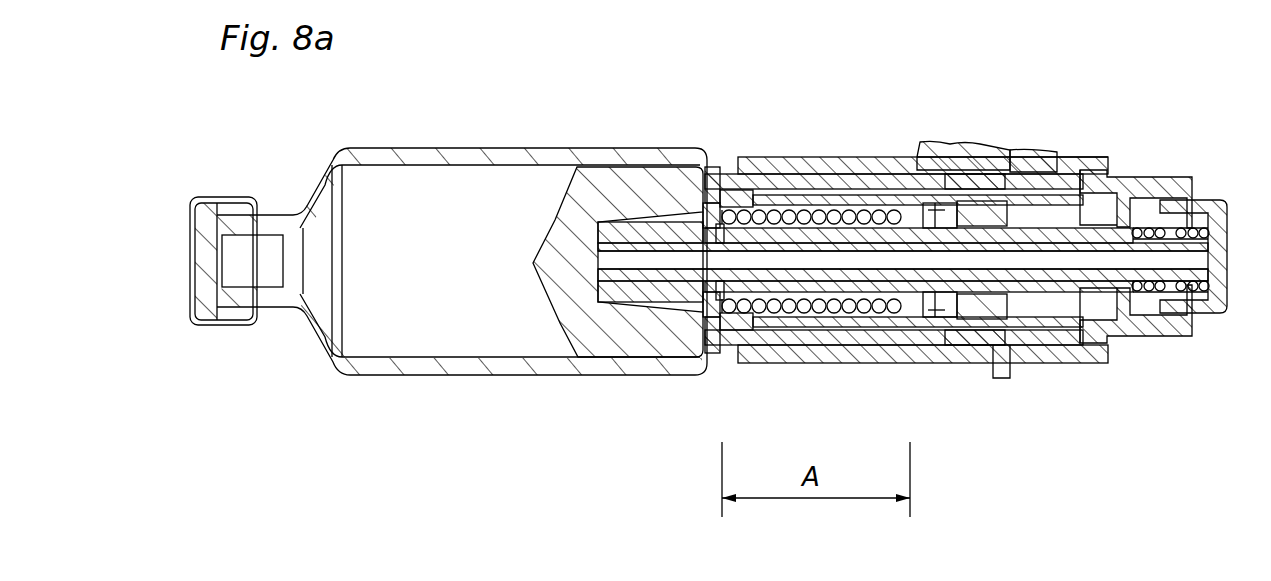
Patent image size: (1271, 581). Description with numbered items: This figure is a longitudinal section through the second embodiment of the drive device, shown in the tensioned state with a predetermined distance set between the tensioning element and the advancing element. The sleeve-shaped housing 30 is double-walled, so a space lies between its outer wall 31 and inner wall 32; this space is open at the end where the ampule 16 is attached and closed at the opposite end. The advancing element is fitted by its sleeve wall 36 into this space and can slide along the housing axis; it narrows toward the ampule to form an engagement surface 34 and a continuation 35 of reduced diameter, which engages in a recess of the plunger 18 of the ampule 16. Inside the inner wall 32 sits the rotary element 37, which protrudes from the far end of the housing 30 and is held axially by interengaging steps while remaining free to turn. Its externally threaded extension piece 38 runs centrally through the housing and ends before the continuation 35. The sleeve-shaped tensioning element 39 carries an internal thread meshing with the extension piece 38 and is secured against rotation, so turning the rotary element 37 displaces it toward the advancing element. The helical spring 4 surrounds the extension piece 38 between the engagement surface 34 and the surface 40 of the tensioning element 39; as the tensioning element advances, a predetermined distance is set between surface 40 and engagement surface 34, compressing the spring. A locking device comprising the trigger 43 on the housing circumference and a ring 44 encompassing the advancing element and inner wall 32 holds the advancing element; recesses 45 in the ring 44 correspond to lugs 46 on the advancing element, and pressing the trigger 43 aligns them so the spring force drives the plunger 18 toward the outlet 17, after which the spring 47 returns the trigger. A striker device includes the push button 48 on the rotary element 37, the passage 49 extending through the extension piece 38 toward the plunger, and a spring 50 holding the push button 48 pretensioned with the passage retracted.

The ampule 16 is at (446, 183).
The outlet 17 is at (272, 247).
The plunger 18 is at (620, 185).
The helical spring 4 is at (838, 212).
The housing 30 is at (878, 195).
The outer wall 31 is at (797, 350).
The inner wall 32 is at (880, 348).
The engagement surface 34 is at (730, 347).
The continuation 35 is at (626, 288).
The sleeve wall 36 is at (790, 158).
The rotary element 37 is at (1120, 180).
The extension piece 38 is at (700, 307).
The tensioning element 39 is at (977, 210).
The surface 40 is at (914, 213).
The trigger 43 is at (1028, 165).
The ring 44 is at (1000, 378).
The recesses 45 is at (994, 78).
The lugs 46 is at (1034, 86).
The spring 47 is at (961, 174).
The push button 48 is at (1205, 206).
The passage 49 is at (722, 300).
The spring 50 is at (1135, 228).